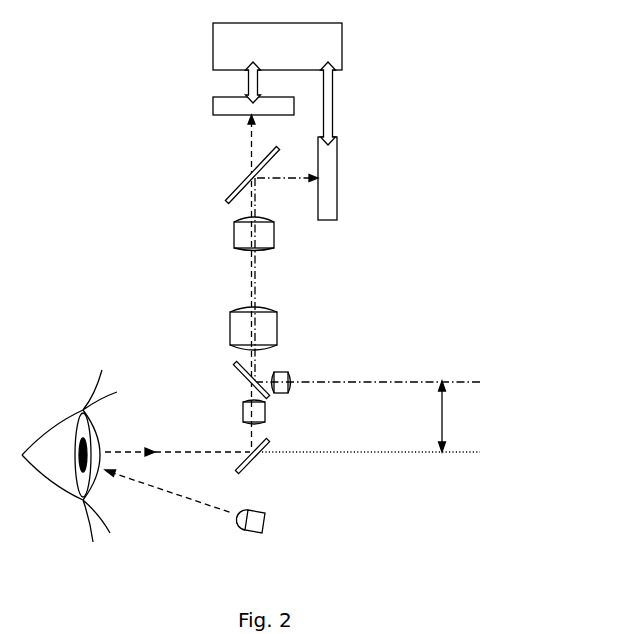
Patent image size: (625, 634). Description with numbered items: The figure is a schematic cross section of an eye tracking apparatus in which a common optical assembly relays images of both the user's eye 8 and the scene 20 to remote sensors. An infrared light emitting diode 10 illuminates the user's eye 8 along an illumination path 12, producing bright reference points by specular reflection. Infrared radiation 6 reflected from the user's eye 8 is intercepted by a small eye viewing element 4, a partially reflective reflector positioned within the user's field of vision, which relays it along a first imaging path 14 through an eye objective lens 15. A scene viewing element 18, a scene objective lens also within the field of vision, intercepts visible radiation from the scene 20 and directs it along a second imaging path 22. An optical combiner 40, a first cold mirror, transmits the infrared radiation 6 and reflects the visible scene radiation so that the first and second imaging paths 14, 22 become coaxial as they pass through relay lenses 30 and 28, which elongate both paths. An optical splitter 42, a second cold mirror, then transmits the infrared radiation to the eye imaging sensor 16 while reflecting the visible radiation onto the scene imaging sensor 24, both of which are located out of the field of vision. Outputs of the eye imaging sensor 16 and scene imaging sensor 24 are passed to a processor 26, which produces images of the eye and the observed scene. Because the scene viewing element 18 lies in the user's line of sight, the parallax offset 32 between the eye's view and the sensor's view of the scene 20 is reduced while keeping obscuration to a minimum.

The processor 26 is at (342, 48).
The eye imaging sensor 16 is at (213, 98).
The scene imaging sensor 24 is at (337, 160).
The optical splitter 42 is at (230, 192).
The relay lens 28 is at (234, 233).
The first imaging path 14 is at (249, 275).
The second imaging path 22 is at (263, 277).
The relay lens 30 is at (230, 312).
The optical combiner 40 is at (235, 378).
The scene viewing element 18 is at (288, 372).
The eye objective lens 15 is at (243, 408).
The eye viewing element 4 is at (252, 463).
The electromagnetic radiation 6 is at (180, 452).
The illumination path 12 is at (195, 503).
The infrared light emitting diode 10 is at (267, 525).
The user's eye 8 is at (50, 440).
The parallax offset 32 is at (442, 418).
The scene 20 is at (569, 428).